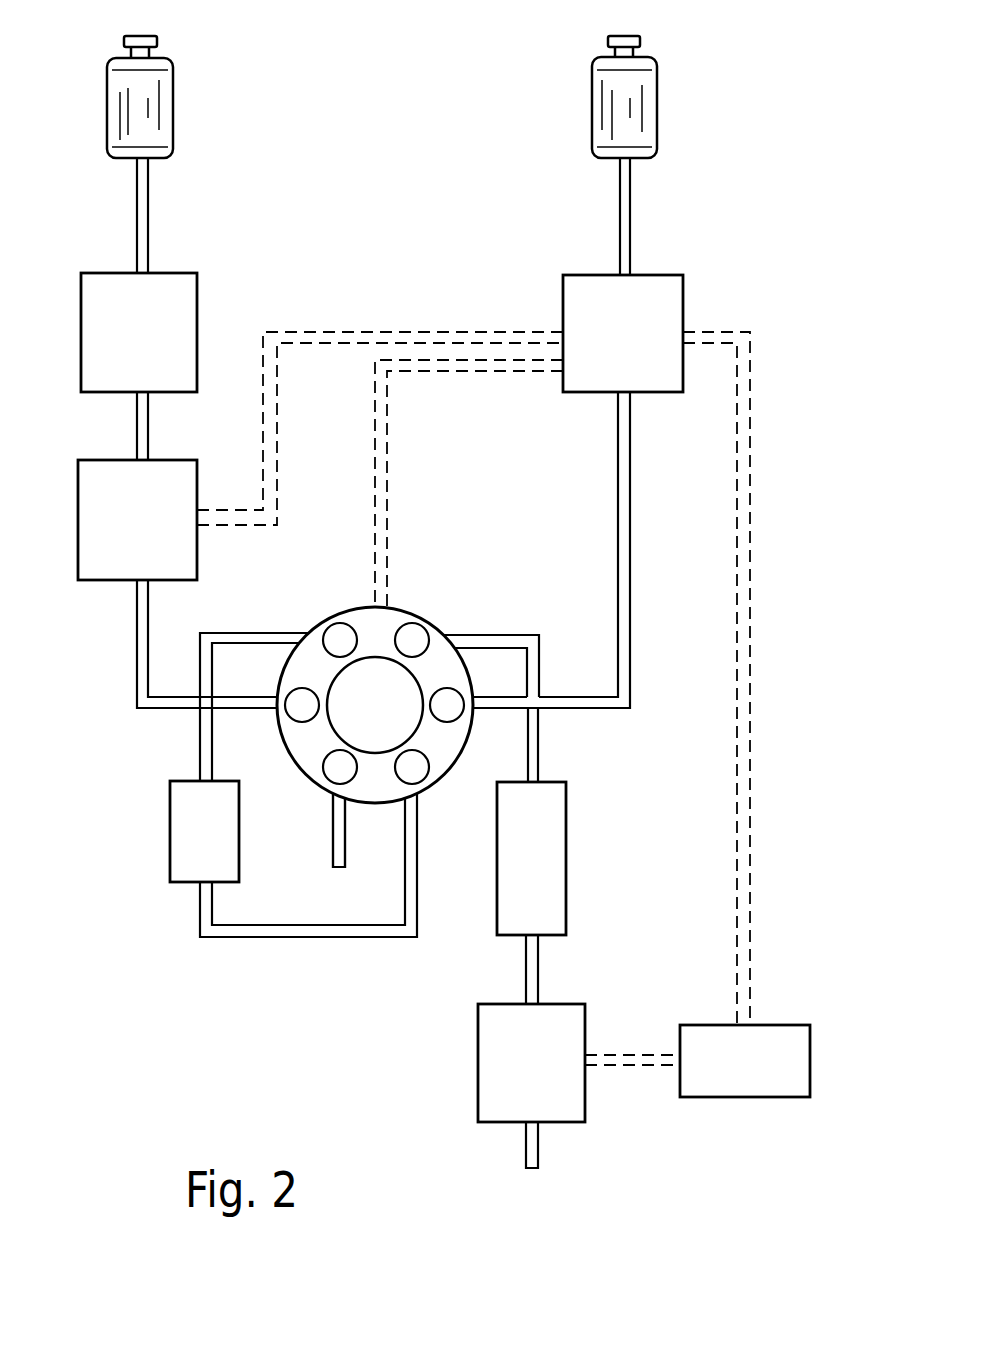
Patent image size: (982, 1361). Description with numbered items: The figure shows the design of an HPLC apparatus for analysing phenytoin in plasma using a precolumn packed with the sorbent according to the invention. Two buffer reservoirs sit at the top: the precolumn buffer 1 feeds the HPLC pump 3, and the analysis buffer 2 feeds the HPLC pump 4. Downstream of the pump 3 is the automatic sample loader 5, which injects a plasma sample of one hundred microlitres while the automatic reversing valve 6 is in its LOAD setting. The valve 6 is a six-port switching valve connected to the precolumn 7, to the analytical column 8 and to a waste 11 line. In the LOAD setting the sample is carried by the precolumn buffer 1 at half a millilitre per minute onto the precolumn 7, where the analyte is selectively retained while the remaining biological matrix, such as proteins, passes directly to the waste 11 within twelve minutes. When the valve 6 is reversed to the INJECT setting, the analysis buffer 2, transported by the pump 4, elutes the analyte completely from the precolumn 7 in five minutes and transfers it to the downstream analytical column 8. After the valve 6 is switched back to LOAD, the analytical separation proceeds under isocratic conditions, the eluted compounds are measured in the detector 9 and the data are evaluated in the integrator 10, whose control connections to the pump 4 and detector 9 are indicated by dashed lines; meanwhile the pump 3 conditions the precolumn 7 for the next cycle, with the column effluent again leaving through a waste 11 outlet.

The precolumn buffer 1 is at (153, 106).
The analysis buffer 2 is at (610, 100).
The HPLC pump (L-6000) 3 is at (190, 299).
The HPLC pump (L-6200) 4 is at (577, 292).
The automatic sample loader (AS-4000) 5 is at (92, 487).
The automatic reversing valve (ELV-7000) 6 is at (407, 680).
The precolumn 7 is at (185, 826).
The analytical column 8 is at (542, 851).
The detector 9 is at (495, 1047).
The integrator (D-2500) 10 is at (788, 1062).
The waste 11 is at (337, 857).